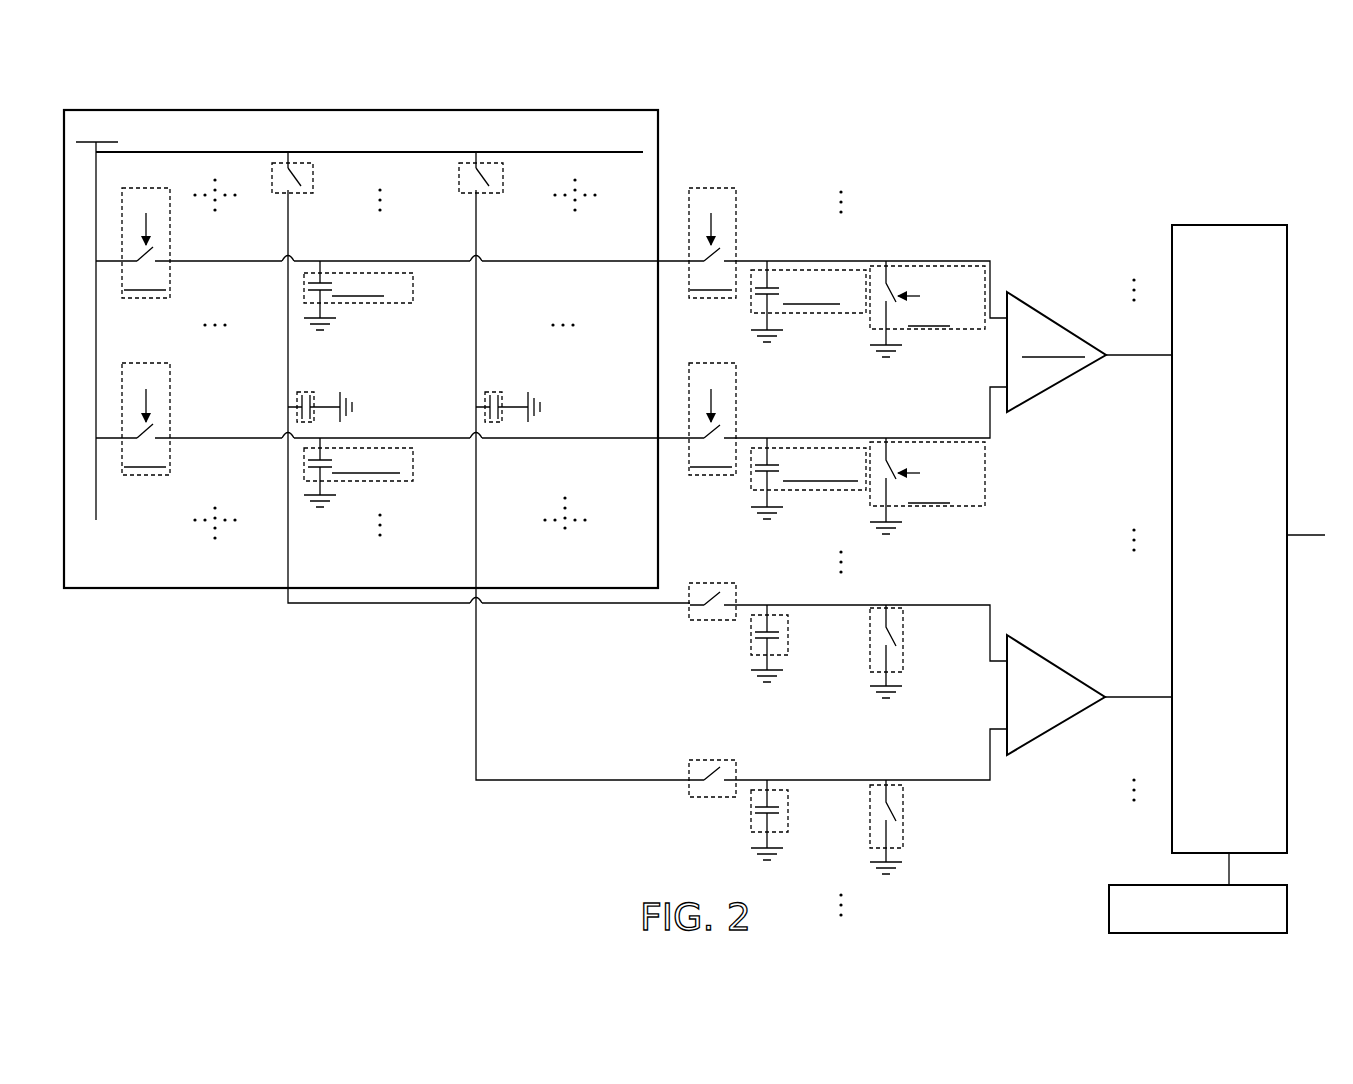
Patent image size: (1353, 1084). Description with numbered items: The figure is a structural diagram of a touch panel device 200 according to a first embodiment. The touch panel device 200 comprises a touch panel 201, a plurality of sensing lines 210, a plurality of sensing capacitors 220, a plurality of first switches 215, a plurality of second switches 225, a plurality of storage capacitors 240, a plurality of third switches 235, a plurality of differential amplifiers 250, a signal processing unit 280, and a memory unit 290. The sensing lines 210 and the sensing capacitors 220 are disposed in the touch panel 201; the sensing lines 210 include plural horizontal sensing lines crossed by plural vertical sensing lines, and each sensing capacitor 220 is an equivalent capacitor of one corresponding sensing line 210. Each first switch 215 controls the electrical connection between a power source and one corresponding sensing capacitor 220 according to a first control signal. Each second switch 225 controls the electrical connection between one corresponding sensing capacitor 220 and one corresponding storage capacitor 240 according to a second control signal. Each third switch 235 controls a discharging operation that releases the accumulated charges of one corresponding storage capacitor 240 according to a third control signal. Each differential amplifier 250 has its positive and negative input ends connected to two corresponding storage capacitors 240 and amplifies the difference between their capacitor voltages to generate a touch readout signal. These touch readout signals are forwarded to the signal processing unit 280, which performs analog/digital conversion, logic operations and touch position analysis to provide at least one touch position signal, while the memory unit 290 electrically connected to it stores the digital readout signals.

The touch panel device 200 is at (1216, 156).
The touch panel 201 is at (658, 142).
The sensing lines 210 is at (206, 262).
The first switches 215 is at (152, 186).
The sensing capacitors 220 is at (413, 285).
The second switches 225 is at (722, 188).
The third switches 235 is at (935, 331).
The storage capacitors 240 is at (815, 316).
The differential amplifiers 250 is at (1042, 312).
The signal processing unit 280 is at (1226, 225).
The memory unit 290 is at (1150, 884).